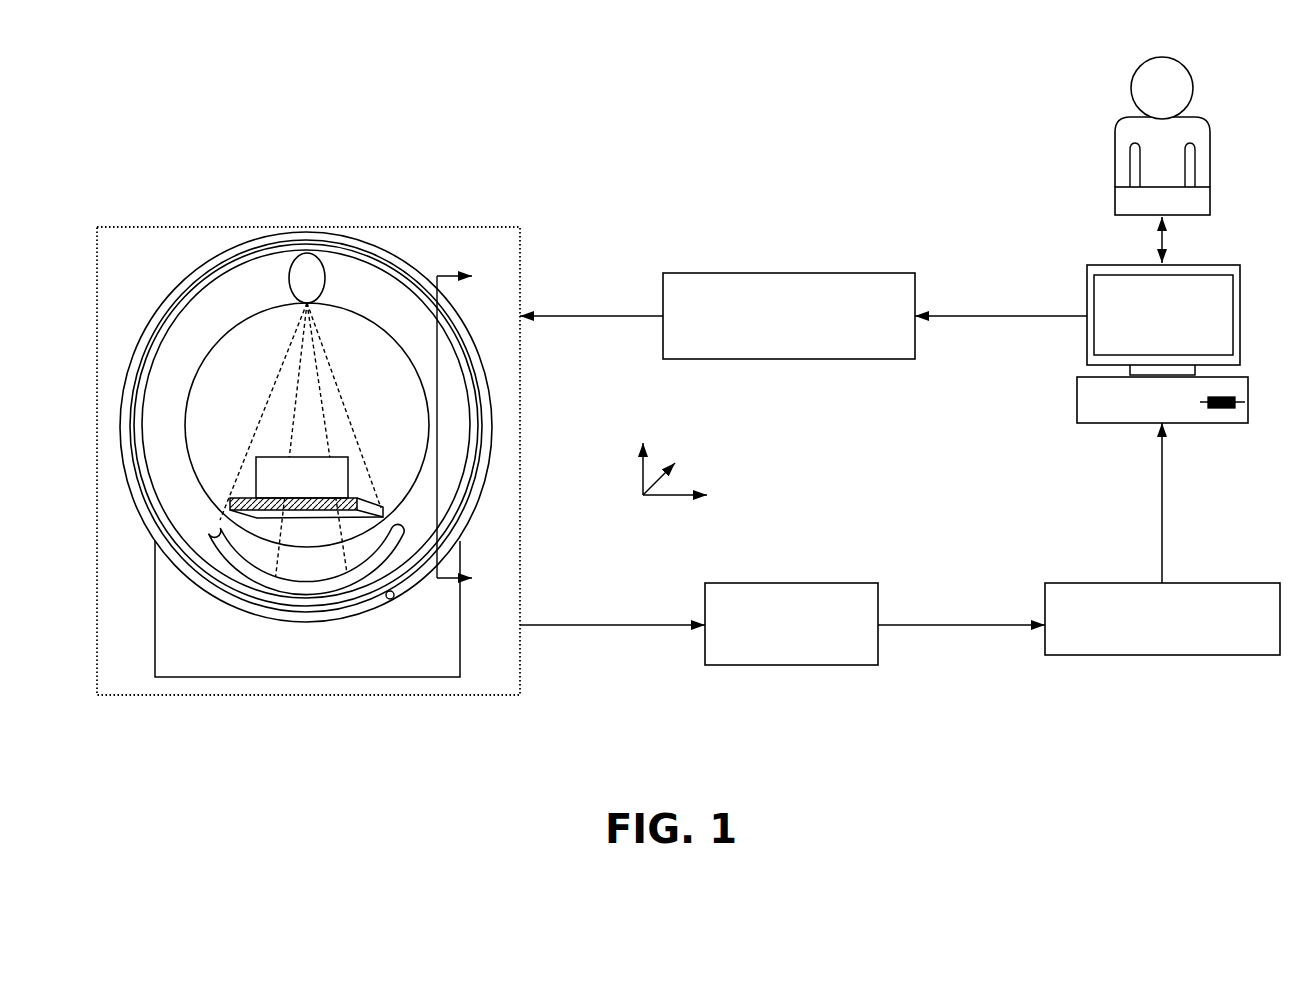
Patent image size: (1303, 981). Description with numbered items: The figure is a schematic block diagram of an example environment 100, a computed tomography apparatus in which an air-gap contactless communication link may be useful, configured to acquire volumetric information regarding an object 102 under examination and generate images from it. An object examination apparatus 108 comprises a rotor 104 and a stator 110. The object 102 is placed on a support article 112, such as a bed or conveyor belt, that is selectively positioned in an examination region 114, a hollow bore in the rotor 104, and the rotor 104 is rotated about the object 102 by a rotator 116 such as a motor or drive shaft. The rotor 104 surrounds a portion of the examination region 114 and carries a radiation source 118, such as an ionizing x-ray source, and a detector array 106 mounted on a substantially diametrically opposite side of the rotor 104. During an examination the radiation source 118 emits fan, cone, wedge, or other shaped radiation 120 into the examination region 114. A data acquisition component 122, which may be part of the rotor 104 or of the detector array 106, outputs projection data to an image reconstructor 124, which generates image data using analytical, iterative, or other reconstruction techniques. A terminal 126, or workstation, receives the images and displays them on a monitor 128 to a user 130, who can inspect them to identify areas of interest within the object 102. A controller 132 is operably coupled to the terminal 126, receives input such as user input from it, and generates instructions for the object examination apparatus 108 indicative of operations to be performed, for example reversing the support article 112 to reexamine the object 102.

The example environment 100 is at (226, 112).
The object 102 is at (267, 457).
The rotor 104 is at (465, 358).
The detector array 106 is at (252, 573).
The object examination apparatus 108 is at (507, 227).
The stator 110 is at (490, 383).
The support article 112 is at (247, 498).
The examination region 114 is at (303, 423).
The rotator 116 is at (392, 600).
The radiation source 118 is at (313, 268).
The radiation 120 is at (273, 388).
The data acquisition component 122 is at (705, 583).
The image reconstructor 124 is at (1045, 583).
The terminal 126 is at (1077, 403).
The monitor 128 is at (1087, 266).
The user 130 is at (1115, 128).
The controller 132 is at (663, 273).